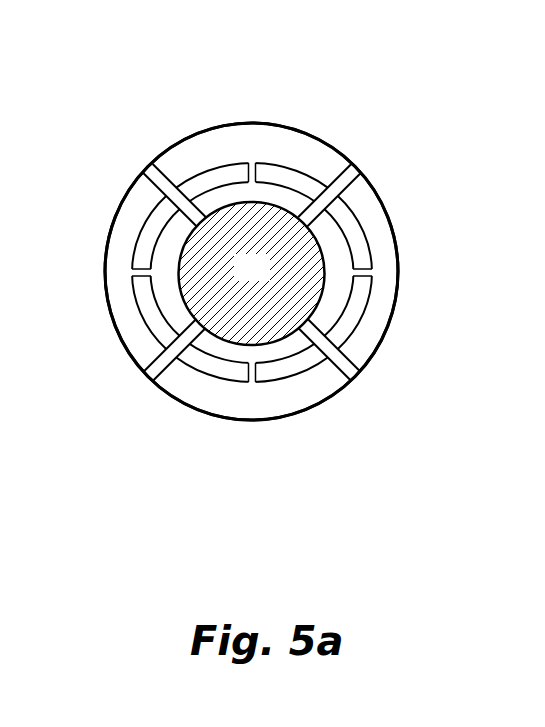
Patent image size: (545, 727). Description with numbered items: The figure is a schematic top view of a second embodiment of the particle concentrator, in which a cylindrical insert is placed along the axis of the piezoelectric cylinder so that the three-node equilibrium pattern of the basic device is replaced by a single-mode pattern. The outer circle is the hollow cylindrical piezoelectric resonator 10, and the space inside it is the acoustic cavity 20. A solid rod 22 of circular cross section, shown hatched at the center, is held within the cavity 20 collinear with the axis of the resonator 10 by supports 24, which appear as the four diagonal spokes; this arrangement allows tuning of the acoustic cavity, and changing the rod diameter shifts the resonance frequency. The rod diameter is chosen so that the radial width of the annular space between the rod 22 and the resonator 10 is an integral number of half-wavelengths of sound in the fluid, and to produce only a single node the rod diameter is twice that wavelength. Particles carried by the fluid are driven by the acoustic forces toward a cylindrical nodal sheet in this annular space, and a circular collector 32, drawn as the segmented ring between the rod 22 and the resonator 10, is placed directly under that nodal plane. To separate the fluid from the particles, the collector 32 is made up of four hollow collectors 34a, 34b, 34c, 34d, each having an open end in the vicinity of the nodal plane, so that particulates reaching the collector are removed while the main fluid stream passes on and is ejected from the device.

The cylindrical resonator 10 is at (375, 187).
The cavity 20 is at (313, 155).
The solid rod 22 is at (265, 278).
The supports 24 is at (170, 178).
The circular collector 32 is at (229, 165).
The hollow collector 34a is at (368, 240).
The hollow collector 34b is at (362, 327).
The hollow collector 34c is at (142, 322).
The hollow collector 34d is at (135, 235).